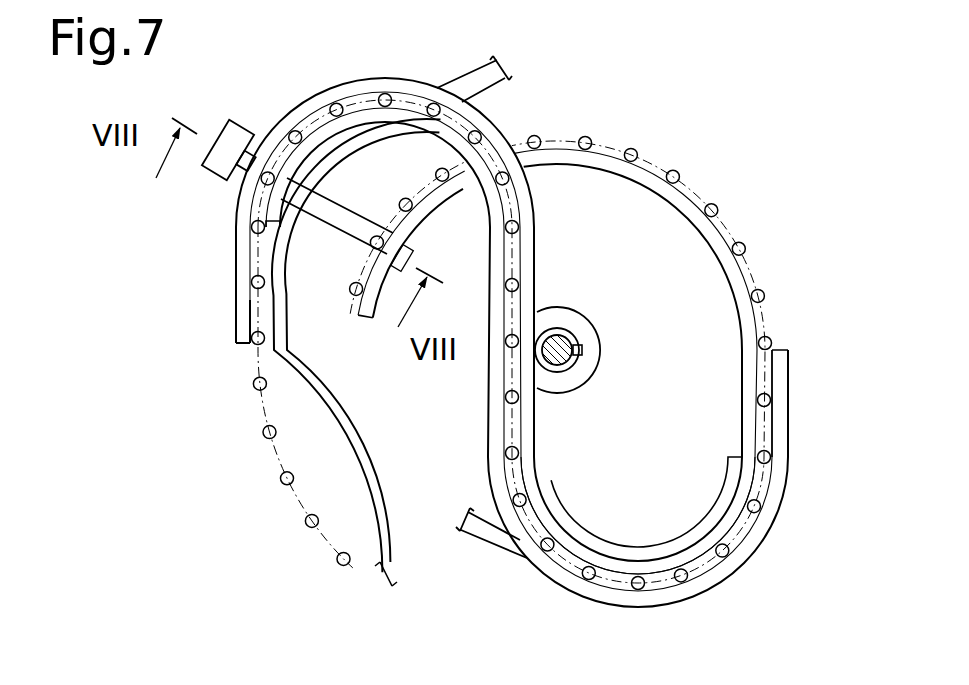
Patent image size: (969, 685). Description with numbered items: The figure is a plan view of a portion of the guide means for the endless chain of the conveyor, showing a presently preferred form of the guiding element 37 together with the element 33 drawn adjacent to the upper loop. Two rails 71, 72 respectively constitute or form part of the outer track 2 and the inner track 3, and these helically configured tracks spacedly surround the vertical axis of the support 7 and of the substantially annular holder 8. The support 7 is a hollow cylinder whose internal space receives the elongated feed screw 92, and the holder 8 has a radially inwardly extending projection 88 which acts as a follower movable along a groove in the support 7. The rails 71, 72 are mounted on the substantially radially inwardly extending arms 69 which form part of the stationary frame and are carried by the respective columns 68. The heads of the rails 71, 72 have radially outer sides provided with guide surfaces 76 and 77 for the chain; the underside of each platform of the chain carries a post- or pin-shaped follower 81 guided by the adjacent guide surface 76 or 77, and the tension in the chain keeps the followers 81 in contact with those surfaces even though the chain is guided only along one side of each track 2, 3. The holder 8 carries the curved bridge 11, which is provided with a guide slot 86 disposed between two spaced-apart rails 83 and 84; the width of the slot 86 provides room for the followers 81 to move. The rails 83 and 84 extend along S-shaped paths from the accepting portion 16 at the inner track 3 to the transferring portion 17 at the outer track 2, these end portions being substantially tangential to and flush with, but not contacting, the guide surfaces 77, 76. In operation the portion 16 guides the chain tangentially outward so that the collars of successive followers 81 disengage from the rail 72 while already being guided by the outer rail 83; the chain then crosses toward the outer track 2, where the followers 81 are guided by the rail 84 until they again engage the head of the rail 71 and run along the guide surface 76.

The outer track 2 is at (277, 460).
The inner track 3 is at (732, 223).
The support 7 is at (572, 355).
The holder 8 is at (575, 377).
The bridge 11 is at (478, 388).
The accepting portion 16 is at (790, 330).
The transferring portion 17 is at (235, 360).
The ball chain branch 33 is at (421, 164).
The guiding element 37 is at (480, 550).
The column 68 is at (233, 133).
The arm 69 is at (348, 228).
The rail 71 is at (307, 480).
The rail 72 is at (730, 273).
The guide surface 76 is at (270, 418).
The guide surface 77 is at (604, 156).
The follower 81 is at (677, 177).
The rail 83 is at (653, 595).
The rail 84 is at (693, 547).
The guide slot 86 is at (610, 578).
The projection 88 is at (583, 350).
The feed screw 92 is at (555, 377).